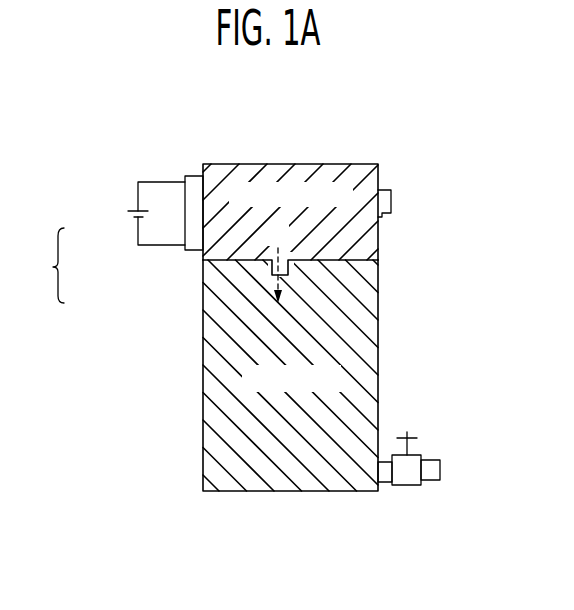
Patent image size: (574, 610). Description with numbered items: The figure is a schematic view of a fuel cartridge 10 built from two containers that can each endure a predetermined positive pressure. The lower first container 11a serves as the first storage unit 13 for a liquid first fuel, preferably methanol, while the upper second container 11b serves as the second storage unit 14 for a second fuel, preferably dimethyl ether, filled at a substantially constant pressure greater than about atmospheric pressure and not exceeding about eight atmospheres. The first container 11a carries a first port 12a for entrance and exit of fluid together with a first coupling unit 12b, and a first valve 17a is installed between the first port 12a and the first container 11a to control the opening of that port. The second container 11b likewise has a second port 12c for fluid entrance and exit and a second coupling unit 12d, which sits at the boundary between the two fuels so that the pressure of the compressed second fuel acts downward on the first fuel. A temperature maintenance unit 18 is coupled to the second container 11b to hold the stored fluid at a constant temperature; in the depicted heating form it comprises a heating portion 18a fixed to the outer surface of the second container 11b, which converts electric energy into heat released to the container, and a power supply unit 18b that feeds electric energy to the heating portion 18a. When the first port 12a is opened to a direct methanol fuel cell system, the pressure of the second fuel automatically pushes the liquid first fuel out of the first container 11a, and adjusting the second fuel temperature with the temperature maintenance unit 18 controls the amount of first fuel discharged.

The fuel cartridge 10 is at (158, 130).
The first container 11a is at (343, 491).
The second container 11b is at (340, 164).
The first port 12a is at (432, 458).
The first coupling unit 12b is at (290, 280).
The second port 12c is at (385, 193).
The second coupling unit 12d is at (292, 254).
The first storage unit 13 is at (270, 491).
The second storage unit 14 is at (283, 168).
The first valve 17a is at (408, 432).
The temperature maintenance unit 18 is at (45, 265).
The heating portion 18a is at (195, 251).
The power supply unit 18b is at (132, 215).